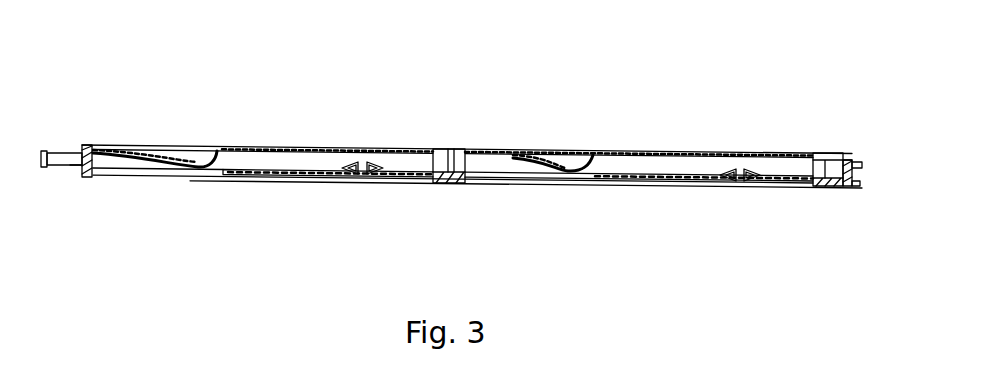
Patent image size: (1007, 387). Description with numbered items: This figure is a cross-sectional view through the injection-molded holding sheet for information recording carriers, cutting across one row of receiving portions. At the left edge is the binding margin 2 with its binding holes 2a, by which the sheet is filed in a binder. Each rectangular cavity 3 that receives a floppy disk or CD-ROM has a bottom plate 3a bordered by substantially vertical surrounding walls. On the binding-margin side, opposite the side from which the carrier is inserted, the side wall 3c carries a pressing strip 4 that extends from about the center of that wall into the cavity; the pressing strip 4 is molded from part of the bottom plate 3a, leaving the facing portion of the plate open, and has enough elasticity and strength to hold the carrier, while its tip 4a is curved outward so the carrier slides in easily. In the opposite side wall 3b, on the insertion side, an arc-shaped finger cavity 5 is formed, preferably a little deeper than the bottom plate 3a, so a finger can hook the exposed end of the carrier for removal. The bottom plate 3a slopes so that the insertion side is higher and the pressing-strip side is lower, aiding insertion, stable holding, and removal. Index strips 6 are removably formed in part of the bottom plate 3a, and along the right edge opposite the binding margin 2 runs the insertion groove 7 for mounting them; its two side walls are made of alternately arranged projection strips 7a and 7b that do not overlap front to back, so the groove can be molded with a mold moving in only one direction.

The binding margin 2 is at (43, 150).
The binding holes 2a is at (72, 170).
The rectangular cavity 3 is at (342, 142).
The bottom plate 3a is at (277, 147).
The side wall 3b is at (112, 179).
The side wall 3c is at (472, 183).
The pressing strip 4 is at (147, 147).
The tip 4a is at (203, 147).
The finger cavity 5 is at (450, 149).
The index strip 6 is at (380, 176).
The insertion groove 7 is at (862, 170).
The projection strips 7a is at (855, 160).
The projection strips 7b is at (850, 187).